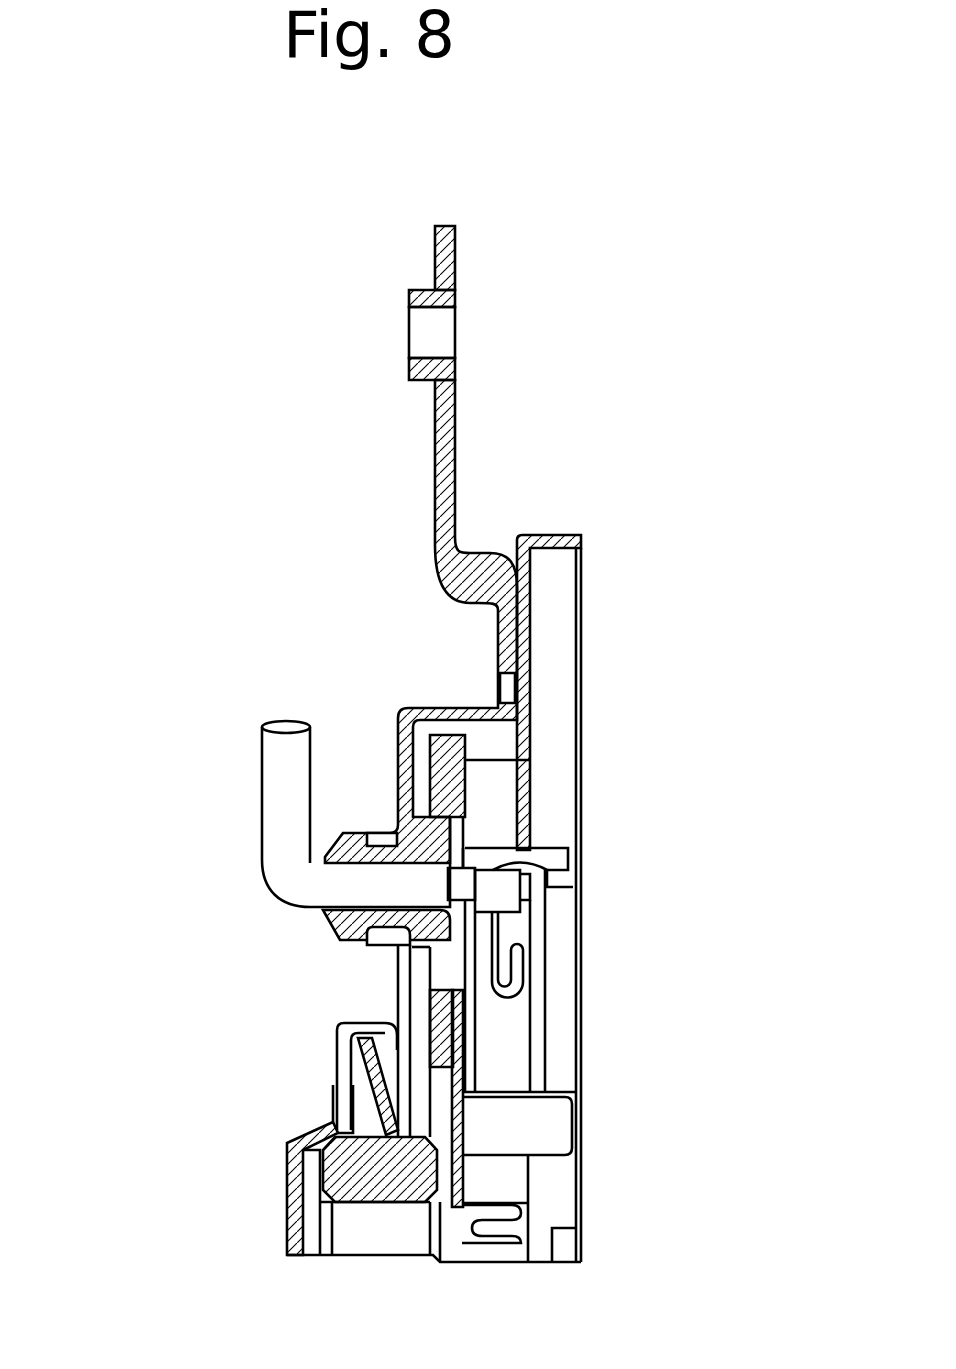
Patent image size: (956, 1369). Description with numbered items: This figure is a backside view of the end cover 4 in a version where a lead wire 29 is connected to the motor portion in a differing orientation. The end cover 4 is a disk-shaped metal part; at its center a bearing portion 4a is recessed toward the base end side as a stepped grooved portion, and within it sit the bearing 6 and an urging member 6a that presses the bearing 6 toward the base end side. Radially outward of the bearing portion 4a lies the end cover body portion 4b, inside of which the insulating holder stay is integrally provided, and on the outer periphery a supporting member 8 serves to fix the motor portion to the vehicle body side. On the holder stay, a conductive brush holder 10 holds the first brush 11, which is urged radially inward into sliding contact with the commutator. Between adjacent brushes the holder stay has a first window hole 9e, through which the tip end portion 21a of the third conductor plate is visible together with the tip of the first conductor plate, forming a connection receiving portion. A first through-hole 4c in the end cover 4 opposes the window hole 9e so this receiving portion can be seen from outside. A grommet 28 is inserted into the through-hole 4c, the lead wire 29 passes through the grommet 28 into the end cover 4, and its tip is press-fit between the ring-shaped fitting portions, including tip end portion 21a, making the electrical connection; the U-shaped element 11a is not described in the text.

The supporting member 8 is at (445, 247).
The end cover 4 is at (559, 505).
The lead wire 29 is at (283, 770).
The tip end portion of the third conductor plate 21a is at (467, 827).
The grommet 28 is at (345, 915).
The first through-hole 4c is at (365, 930).
The end cover body portion 4b is at (398, 980).
The first window hole 9e is at (498, 888).
The U-shaped portion 11a is at (487, 930).
The brush holder 10 is at (560, 1033).
The first brush 11 is at (517, 1128).
The urging member 6a is at (395, 1088).
The bearing 6 is at (363, 1168).
The bearing portion 4a is at (307, 1227).